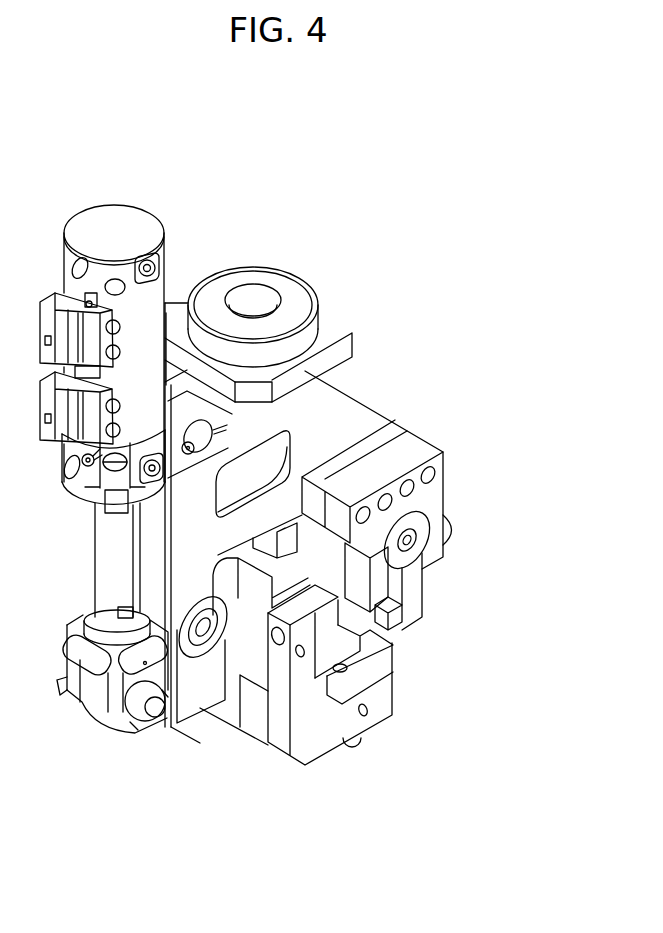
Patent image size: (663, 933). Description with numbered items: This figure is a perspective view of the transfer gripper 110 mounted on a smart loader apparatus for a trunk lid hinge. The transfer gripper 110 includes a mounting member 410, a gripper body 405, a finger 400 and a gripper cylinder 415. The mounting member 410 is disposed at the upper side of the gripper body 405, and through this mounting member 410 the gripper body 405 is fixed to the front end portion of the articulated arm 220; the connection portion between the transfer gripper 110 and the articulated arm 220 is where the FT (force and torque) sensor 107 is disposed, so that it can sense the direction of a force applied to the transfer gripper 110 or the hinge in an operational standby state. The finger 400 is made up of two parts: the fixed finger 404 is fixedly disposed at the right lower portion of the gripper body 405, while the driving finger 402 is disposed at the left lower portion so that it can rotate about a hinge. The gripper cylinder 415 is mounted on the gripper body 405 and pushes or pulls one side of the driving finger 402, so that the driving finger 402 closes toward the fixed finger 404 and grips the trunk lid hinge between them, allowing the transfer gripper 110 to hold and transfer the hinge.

The transfer gripper 110 is at (289, 522).
The finger 400 is at (289, 465).
The driving finger 402 is at (385, 665).
The fixed finger 404 is at (407, 617).
The gripper body 405 is at (350, 398).
The mounting member 410 is at (270, 266).
The gripper cylinder 415 is at (150, 308).
The articulated arm 220 is at (255, 242).
The FT sensor 107 is at (254, 288).